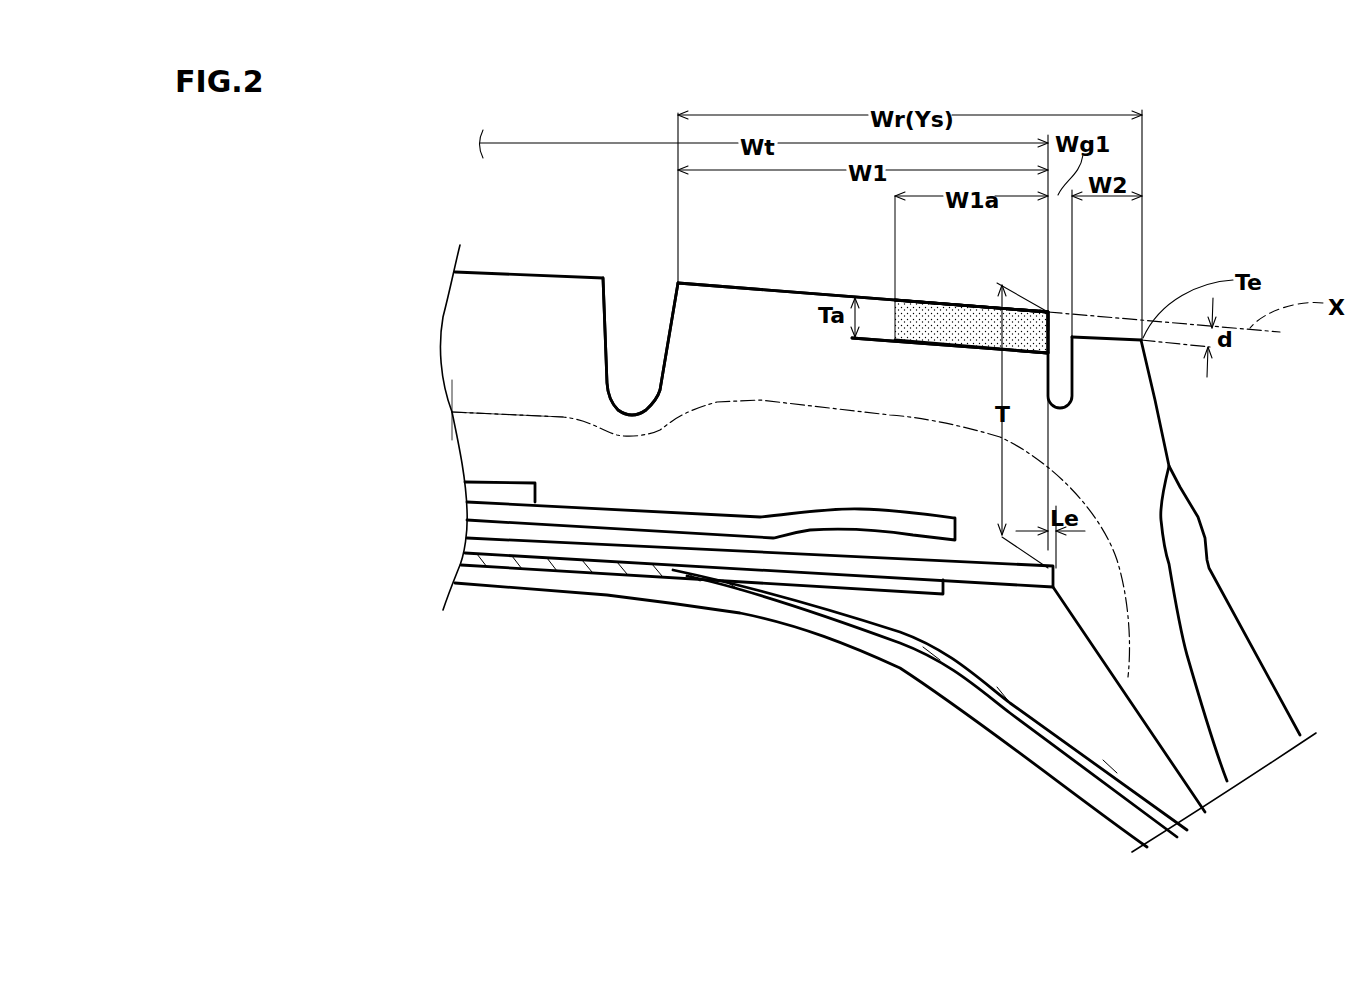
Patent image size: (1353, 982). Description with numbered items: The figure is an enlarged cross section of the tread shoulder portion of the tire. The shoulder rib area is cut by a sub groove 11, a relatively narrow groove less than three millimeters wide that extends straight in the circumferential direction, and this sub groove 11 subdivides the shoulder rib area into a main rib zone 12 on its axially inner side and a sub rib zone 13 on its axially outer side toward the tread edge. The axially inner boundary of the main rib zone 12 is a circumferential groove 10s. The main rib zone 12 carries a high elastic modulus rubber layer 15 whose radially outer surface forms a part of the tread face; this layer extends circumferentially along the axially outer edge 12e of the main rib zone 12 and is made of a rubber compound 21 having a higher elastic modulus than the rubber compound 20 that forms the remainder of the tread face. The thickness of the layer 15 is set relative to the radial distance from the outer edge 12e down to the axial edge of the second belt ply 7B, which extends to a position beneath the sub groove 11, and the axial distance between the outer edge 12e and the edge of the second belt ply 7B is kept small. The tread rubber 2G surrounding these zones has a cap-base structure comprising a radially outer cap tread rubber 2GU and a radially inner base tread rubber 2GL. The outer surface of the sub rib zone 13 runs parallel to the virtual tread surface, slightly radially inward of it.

The tread rubber 2G is at (337, 353).
The cap tread rubber 2GU is at (483, 372).
The base tread rubber 2GL is at (483, 452).
The second belt ply 7B is at (997, 570).
The main groove 10s is at (632, 323).
The sub groove 11 is at (1060, 390).
The main rib zone 12 is at (768, 289).
The axially outer edge of the main rib zone 12e is at (1053, 302).
The sub rib zone 13 is at (1093, 335).
The high elastic modulus rubber layer 15 is at (965, 325).
The rubber compound 21 is at (971, 326).
The rubber compound 20 is at (751, 369).